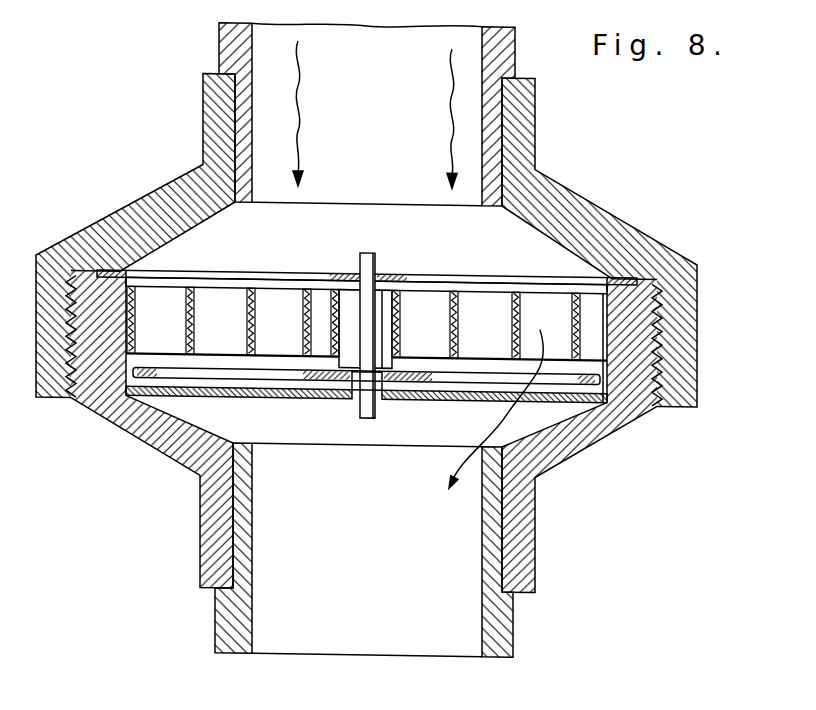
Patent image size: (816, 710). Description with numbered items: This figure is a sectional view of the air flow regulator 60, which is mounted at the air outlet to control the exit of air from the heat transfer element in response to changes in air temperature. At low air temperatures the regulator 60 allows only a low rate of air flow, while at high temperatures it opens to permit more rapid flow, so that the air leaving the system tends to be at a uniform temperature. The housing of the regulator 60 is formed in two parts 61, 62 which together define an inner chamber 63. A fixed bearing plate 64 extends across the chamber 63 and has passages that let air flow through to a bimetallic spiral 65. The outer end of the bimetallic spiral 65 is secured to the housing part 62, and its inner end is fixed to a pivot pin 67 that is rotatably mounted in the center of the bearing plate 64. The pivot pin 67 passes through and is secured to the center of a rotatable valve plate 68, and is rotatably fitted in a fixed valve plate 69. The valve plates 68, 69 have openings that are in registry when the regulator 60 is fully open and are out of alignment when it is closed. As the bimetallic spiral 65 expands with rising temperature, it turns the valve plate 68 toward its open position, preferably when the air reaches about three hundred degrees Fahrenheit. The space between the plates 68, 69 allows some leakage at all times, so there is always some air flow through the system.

The air flow regulator 60 is at (141, 183).
The housing part 61 is at (576, 209).
The housing part 62 is at (583, 440).
The inner chamber 63 is at (462, 249).
The fixed bearing plate 64 is at (340, 273).
The bimetallic spiral 65 is at (425, 478).
The pivot pin 67 is at (376, 262).
The rotatable valve plate 68 is at (600, 374).
The fixed valve plate 69 is at (607, 398).